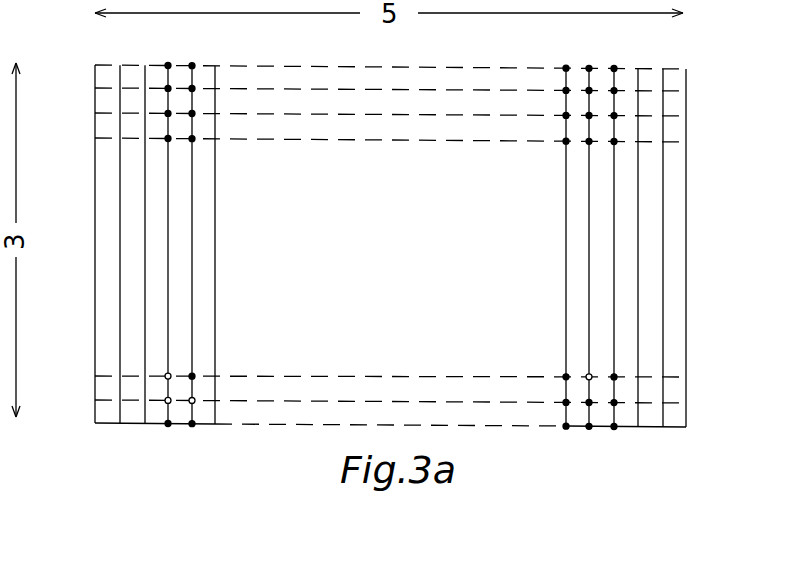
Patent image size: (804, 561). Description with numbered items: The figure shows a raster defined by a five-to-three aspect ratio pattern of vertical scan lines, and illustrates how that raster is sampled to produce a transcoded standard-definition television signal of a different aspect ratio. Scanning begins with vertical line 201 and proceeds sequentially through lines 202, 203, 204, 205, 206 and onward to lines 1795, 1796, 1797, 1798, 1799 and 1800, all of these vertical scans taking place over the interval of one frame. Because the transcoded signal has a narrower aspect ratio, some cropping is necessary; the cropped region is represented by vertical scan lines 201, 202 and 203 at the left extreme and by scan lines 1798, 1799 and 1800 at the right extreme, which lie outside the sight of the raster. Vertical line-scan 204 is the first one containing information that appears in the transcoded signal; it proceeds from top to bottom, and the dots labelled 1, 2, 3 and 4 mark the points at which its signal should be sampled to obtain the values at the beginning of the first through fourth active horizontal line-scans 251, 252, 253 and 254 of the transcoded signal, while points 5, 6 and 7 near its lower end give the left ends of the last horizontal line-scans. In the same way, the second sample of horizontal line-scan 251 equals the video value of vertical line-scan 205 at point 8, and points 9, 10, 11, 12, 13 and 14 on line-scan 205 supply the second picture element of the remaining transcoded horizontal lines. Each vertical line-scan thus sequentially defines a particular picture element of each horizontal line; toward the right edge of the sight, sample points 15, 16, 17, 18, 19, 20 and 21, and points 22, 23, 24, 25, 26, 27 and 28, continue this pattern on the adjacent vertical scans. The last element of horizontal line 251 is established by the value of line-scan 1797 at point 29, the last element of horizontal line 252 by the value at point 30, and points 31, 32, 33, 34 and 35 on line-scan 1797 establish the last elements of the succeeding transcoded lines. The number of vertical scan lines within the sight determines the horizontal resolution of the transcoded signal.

The sample point 1 is at (168, 65).
The sample point 2 is at (168, 88).
The sample point 3 is at (146, 96).
The sample point 4 is at (168, 138).
The sample point 5 is at (168, 376).
The sample point 6 is at (168, 400).
The sample point 7 is at (168, 423).
The sample point 8 is at (192, 65).
The sample point 9 is at (192, 88).
The sample point 10 is at (192, 113).
The sample point 11 is at (192, 138).
The sample point 12 is at (192, 376).
The sample point 13 is at (192, 400).
The sample point 14 is at (192, 423).
The sample point 15 is at (566, 68).
The sample point 16 is at (566, 90).
The sample point 17 is at (566, 115).
The sample point 18 is at (566, 141).
The sample point 19 is at (566, 377).
The sample point 20 is at (566, 402).
The sample point 21 is at (566, 426).
The sample point 22 is at (589, 68).
The sample point 23 is at (589, 90).
The sample point 24 is at (589, 115).
The sample point 25 is at (589, 141).
The sample point 26 is at (589, 377).
The sample point 27 is at (589, 402).
The sample point 28 is at (589, 426).
The sample point 29 is at (614, 68).
The sample point 30 is at (614, 90).
The sample point 31 is at (614, 115).
The sample point 32 is at (614, 141).
The sample point 33 is at (614, 377).
The sample point 34 is at (614, 402).
The sample point 35 is at (614, 427).
The vertical scan line 201 is at (95, 165).
The vertical scan line 202 is at (120, 193).
The vertical scan line 203 is at (145, 222).
The vertical line-scan 204 is at (168, 280).
The vertical line-scan 205 is at (192, 248).
The vertical scan line 206 is at (215, 283).
The horizontal line-scan 251 is at (318, 64).
The horizontal line-scan 252 is at (318, 89).
The horizontal line-scan 253 is at (328, 114).
The horizontal line-scan 254 is at (323, 139).
The vertical scan line 1795 is at (567, 288).
The vertical scan line 1796 is at (590, 260).
The vertical line-scan 1797 is at (615, 237).
The vertical scan line 1798 is at (639, 211).
The vertical scan line 1799 is at (663, 175).
The vertical scan line 1800 is at (717, 222).